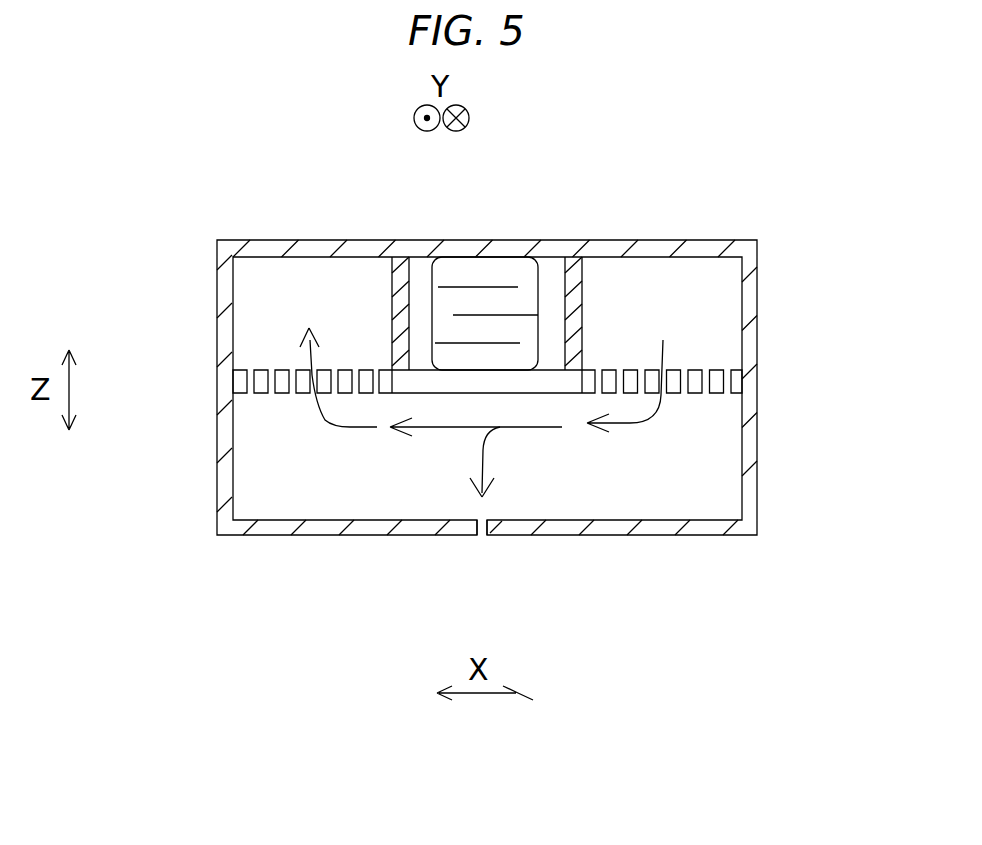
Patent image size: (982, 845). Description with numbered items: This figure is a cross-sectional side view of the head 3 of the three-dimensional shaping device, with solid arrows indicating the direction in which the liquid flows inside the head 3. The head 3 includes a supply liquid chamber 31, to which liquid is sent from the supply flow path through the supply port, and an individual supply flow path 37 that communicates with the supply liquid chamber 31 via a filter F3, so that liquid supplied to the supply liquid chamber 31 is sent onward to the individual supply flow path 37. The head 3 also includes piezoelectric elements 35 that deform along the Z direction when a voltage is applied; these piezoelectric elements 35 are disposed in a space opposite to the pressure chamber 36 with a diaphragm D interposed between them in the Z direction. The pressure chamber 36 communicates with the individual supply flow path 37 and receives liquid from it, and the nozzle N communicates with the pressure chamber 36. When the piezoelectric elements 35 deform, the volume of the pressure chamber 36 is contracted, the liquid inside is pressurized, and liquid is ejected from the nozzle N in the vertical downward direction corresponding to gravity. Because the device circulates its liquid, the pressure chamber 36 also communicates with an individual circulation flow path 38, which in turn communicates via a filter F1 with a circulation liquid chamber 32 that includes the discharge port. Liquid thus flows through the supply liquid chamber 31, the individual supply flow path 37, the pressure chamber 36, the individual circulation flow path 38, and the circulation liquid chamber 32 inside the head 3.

The head 3 is at (835, 230).
The supply liquid chamber 31 is at (693, 302).
The circulation liquid chamber 32 is at (282, 303).
The piezoelectric elements 35 is at (503, 270).
The pressure chamber 36 is at (518, 470).
The individual supply flow path 37 is at (668, 428).
The individual circulation flow path 38 is at (288, 428).
The diaphragm D is at (448, 388).
The nozzle N is at (477, 533).
The filter F1 is at (285, 367).
The filter F3 is at (715, 372).